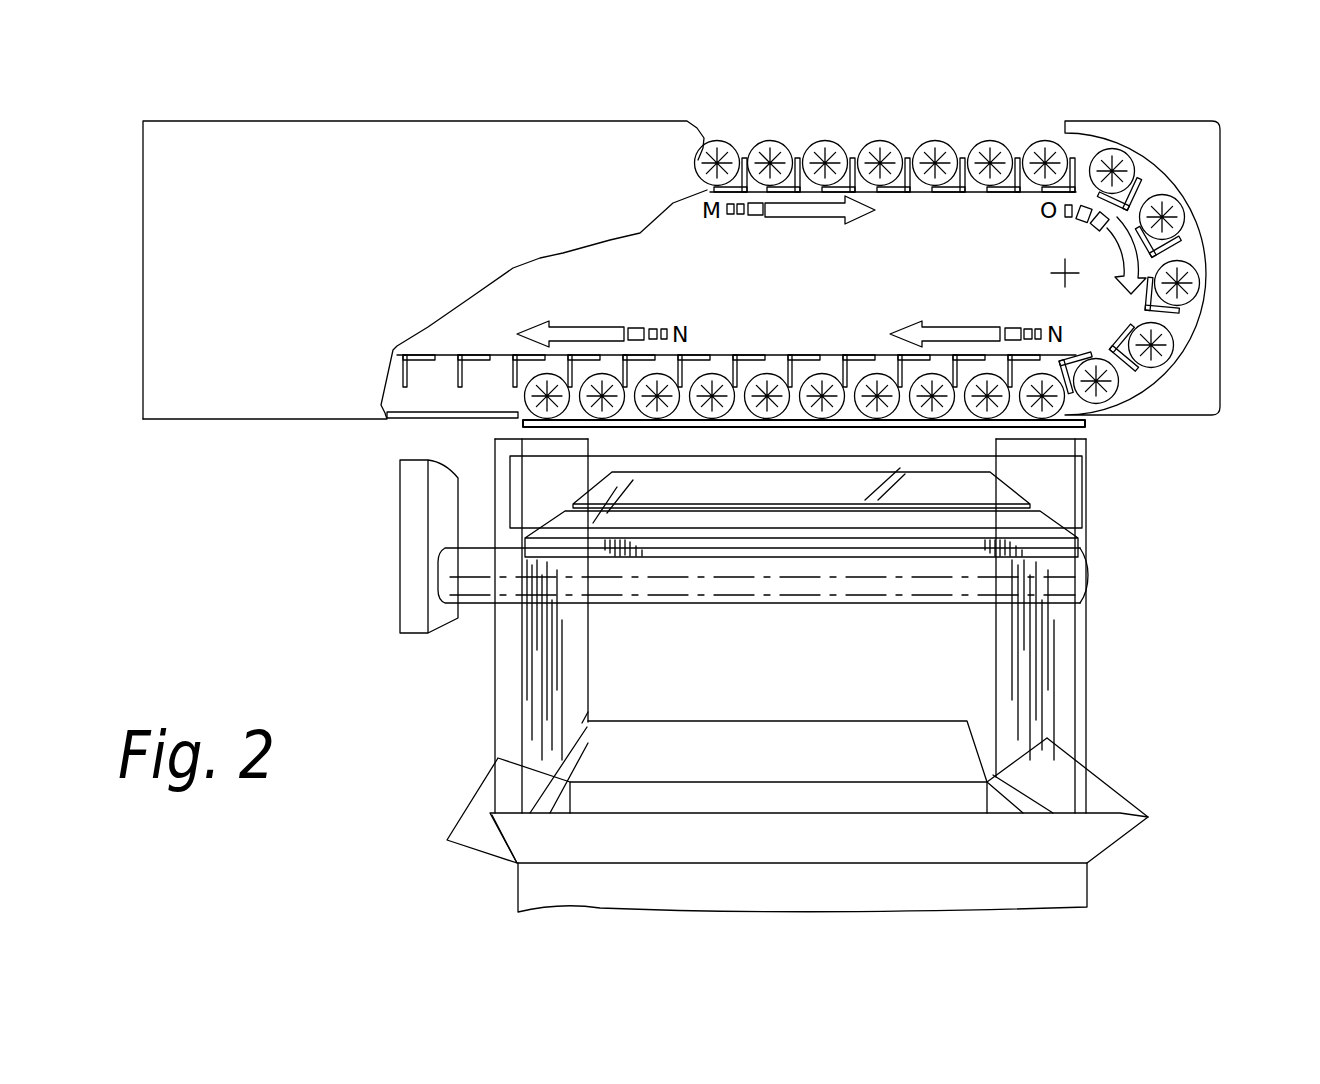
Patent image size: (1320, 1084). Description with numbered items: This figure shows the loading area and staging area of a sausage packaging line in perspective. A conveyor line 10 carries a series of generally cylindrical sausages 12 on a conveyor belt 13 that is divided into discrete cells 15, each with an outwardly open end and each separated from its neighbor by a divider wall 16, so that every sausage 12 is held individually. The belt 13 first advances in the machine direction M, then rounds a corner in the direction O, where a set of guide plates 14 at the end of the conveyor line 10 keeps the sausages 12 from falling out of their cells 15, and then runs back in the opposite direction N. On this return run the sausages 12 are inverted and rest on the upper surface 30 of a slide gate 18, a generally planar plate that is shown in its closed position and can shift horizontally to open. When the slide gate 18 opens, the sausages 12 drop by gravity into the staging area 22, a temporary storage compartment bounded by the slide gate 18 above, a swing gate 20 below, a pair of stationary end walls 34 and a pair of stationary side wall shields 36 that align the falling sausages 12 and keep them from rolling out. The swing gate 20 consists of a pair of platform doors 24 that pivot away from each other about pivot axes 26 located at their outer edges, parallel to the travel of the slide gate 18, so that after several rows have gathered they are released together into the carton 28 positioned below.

The conveyor line 10 is at (722, 110).
The sausage 12 is at (773, 156).
The conveyor belt 13 is at (914, 194).
The guide plate 14 is at (1204, 153).
The cell 15 is at (906, 158).
The divider wall 16 is at (854, 158).
The slide gate 18 is at (958, 420).
The swing gate 20 is at (1080, 543).
The staging area 22 is at (1048, 490).
The platform door 24 is at (1040, 548).
The pivot axis 26 is at (1070, 587).
The carton 28 is at (1068, 882).
The upper surface 30 is at (572, 413).
The end wall 34 is at (1080, 684).
The side wall 36 is at (547, 485).